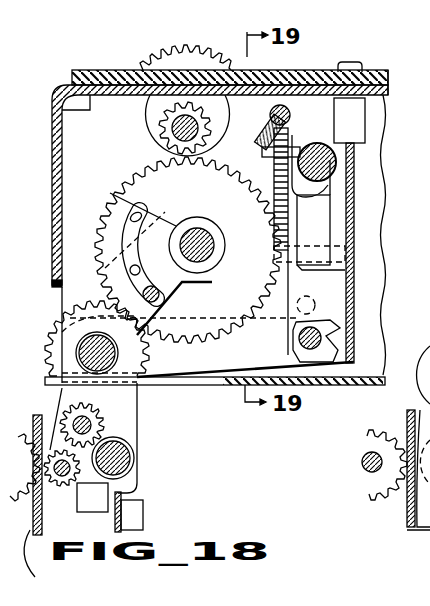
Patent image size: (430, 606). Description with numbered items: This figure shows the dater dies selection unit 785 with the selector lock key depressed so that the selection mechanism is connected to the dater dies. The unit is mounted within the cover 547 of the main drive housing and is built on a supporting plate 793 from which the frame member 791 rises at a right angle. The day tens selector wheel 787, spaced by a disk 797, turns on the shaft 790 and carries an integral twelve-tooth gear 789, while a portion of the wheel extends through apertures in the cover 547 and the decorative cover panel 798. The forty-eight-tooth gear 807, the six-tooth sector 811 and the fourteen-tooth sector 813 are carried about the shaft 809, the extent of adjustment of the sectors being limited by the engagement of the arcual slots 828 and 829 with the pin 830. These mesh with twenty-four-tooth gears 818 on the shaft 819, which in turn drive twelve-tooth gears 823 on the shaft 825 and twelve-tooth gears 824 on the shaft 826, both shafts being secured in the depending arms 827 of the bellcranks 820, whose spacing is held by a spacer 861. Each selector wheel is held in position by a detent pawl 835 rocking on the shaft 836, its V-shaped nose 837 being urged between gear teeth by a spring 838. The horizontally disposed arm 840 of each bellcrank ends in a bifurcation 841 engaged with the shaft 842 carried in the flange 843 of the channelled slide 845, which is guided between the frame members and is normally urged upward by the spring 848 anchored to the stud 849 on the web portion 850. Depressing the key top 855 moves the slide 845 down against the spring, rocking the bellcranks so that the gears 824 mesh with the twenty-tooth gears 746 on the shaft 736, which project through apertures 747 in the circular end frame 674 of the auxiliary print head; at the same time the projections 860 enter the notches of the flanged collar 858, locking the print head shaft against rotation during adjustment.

The cover 547 is at (327, 80).
The circular end frame 674 is at (42, 556).
The shaft 736 is at (362, 461).
The twenty-tooth gear 746 is at (42, 514).
The aperture 747 is at (30, 445).
The dater dies selection unit 785 is at (278, 69).
The day tens selector wheel 787 is at (158, 62).
The twelve-tooth gear 789 is at (172, 133).
The shaft 790 is at (196, 152).
The frame member 791 is at (92, 137).
The supporting plate 793 is at (363, 386).
The disk 797 is at (145, 125).
The cover panel 798 is at (386, 82).
The forty-eight-tooth gear 807 is at (278, 282).
The shaft 809 is at (207, 275).
The six-tooth sector 811 is at (100, 283).
The fourteen-tooth sector 813 is at (110, 193).
The twenty-four-tooth gear 818 is at (143, 352).
The shaft 819 is at (85, 350).
The bellcrank 820 is at (125, 410).
The twelve-tooth gear 823 is at (98, 427).
The twelve-tooth gear 824 is at (85, 490).
The shaft 825 is at (96, 441).
The shaft 826 is at (53, 495).
The depending arm 827 is at (137, 448).
The arcual slot 828 is at (141, 272).
The arcual slot 829 is at (142, 209).
The pin 830 is at (163, 298).
The detent pawl 835 is at (318, 222).
The shaft 836 is at (356, 166).
The V-shaped nose 837 is at (274, 252).
The spring 838 is at (266, 128).
The horizontally disposed arm 840 is at (202, 358).
The bifurcation 841 is at (384, 320).
The shaft 842 is at (300, 341).
The flange 843 is at (337, 233).
The channelled slide 845 is at (362, 279).
The spring 848 is at (291, 134).
The stud 849 is at (327, 292).
The web portion 850 is at (356, 158).
The key top 855 is at (352, 67).
The flanged collar 858 is at (143, 520).
The projection 860 is at (142, 494).
The spacer 861 is at (125, 474).